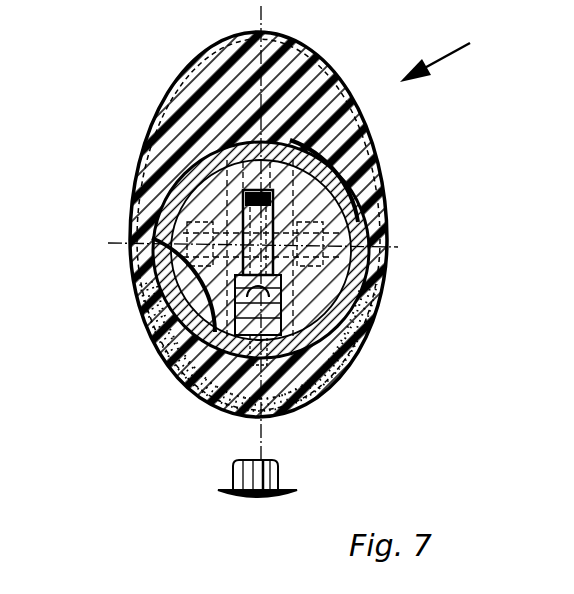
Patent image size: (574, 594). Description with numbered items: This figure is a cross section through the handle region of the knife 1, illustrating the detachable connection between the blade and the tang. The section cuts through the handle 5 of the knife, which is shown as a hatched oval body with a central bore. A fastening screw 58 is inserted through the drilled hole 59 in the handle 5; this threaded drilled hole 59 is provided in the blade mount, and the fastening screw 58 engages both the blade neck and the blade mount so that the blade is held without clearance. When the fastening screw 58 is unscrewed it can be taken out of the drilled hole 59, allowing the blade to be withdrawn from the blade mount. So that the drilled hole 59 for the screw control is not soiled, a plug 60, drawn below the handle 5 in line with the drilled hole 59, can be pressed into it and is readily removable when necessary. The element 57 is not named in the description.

The knife 1 is at (435, 52).
The handle 5 is at (182, 103).
The bolt 57 is at (238, 207).
The fastening screw 58 is at (255, 318).
The drilled hole 59 is at (290, 413).
The plug 60 is at (233, 473).